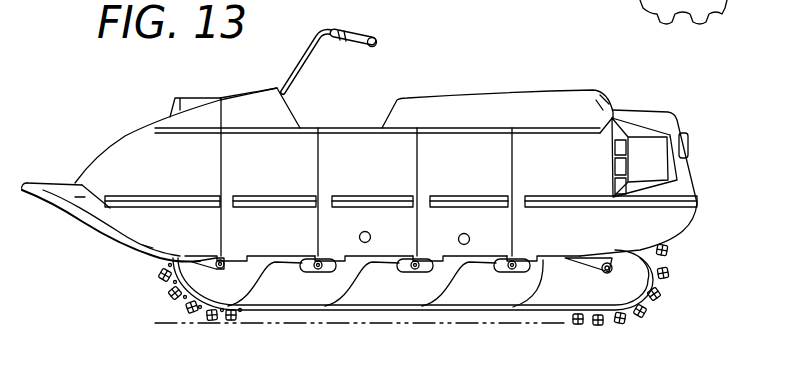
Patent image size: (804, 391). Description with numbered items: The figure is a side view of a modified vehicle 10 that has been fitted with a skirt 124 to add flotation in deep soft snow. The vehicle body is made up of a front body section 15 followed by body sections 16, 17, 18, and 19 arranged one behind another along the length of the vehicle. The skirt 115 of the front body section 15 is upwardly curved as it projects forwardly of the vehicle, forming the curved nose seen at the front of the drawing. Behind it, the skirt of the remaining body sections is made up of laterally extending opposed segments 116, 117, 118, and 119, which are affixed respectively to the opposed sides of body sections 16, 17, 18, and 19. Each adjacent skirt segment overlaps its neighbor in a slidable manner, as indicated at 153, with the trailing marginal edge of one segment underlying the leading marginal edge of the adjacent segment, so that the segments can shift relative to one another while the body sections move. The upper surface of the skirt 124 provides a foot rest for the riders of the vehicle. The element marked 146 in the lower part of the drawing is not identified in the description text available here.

The vehicle 10 is at (457, 74).
The front body section 15 is at (123, 155).
The body section 16 is at (285, 177).
The body section 17 is at (365, 192).
The body section 18 is at (462, 192).
The body section 19 is at (604, 192).
The skirt of the front body section 115 is at (224, 312).
The skirt segment 116 is at (278, 256).
The skirt segment 117 is at (393, 256).
The skirt segment 118 is at (479, 256).
The skirt segment 119 is at (560, 257).
The skirt 124 is at (258, 258).
The bogie wheel 146 is at (480, 296).
The overlap of adjacent skirt segments 153 is at (215, 318).